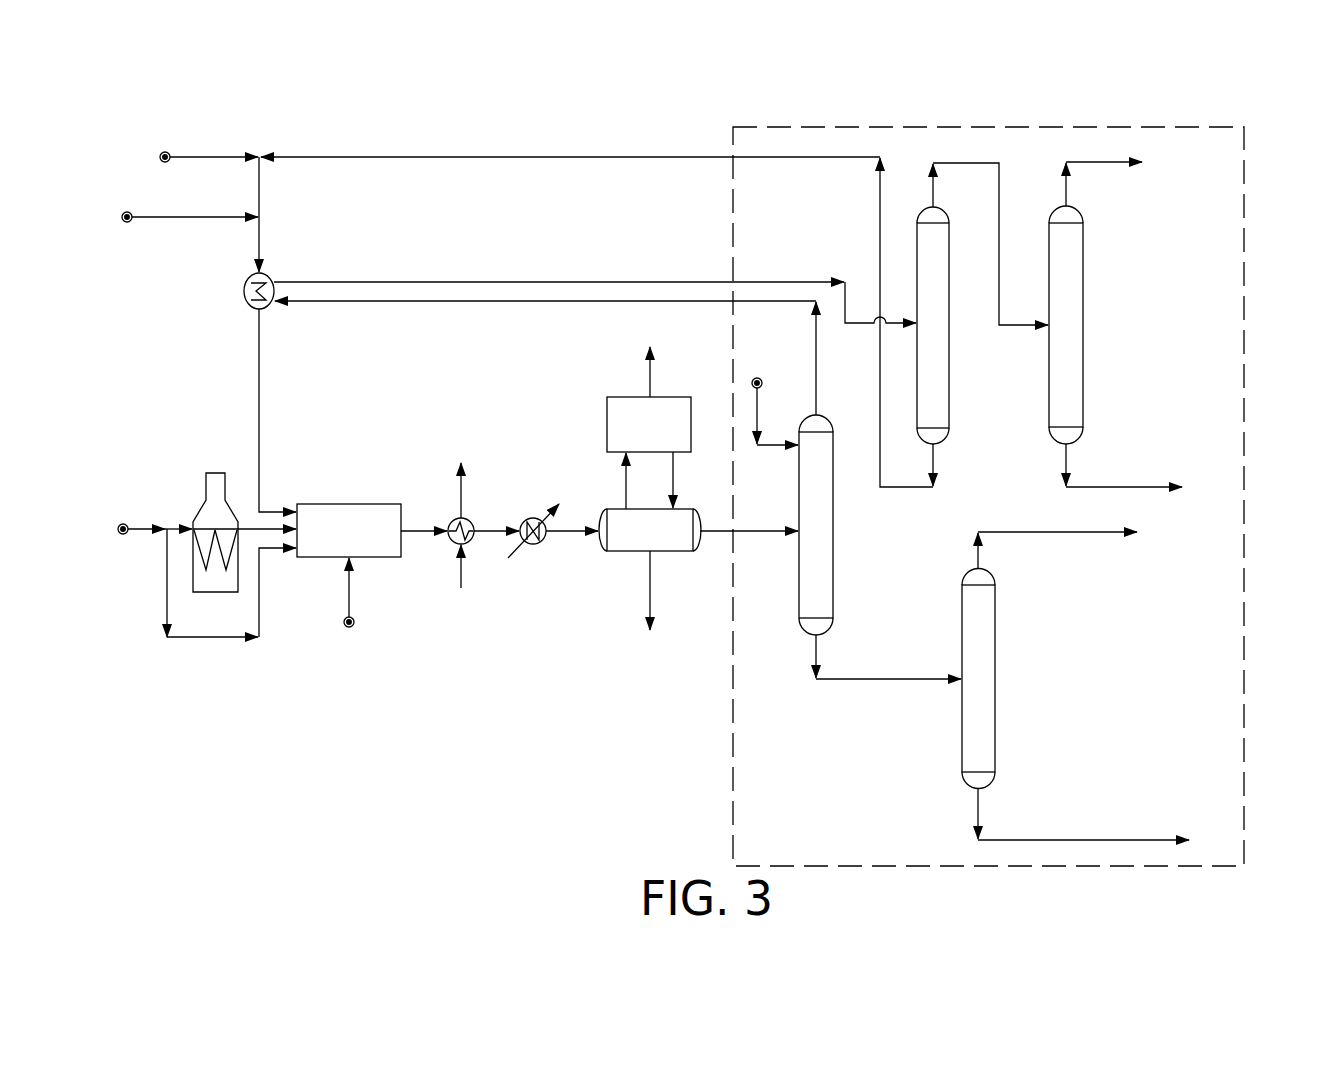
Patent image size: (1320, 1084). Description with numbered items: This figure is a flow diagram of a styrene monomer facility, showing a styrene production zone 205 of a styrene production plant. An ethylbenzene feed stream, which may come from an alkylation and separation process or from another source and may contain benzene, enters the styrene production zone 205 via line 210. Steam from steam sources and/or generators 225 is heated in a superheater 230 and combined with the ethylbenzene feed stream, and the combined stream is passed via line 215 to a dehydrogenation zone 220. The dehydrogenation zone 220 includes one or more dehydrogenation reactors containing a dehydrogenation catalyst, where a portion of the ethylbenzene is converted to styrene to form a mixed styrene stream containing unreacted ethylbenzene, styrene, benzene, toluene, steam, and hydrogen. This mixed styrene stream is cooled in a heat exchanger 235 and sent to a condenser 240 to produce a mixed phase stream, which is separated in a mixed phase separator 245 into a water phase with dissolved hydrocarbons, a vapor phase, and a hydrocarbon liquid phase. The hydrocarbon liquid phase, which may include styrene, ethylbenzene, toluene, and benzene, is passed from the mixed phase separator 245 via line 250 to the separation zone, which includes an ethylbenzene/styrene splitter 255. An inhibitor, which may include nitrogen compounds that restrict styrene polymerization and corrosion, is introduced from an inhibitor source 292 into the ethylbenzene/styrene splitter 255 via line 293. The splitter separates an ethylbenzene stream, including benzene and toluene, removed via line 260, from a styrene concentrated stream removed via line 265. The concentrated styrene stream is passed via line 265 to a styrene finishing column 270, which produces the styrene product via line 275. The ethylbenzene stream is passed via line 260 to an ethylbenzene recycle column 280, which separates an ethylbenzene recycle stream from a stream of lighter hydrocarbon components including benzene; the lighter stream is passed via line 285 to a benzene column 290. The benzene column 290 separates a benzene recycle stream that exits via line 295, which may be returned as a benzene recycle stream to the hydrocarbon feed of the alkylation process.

The styrene production zone 205 is at (334, 155).
The line 210 is at (205, 155).
The line 215 is at (261, 355).
The dehydrogenation zone 220 is at (350, 503).
The steam sources and/or generators 225 is at (138, 525).
The superheater 230 is at (216, 471).
The heat exchanger 235 is at (470, 512).
The condenser 240 is at (535, 546).
The separator 245 is at (609, 552).
The line 250 is at (704, 536).
The ethylbenzene/styrene splitter 255 is at (1207, 125).
The line 260 is at (820, 392).
The line 265 is at (864, 682).
The styrene finishing column 270 is at (997, 690).
The line 275 is at (1073, 535).
The ethylbenzene recycle column 280 is at (951, 358).
The line 285 is at (968, 160).
The benzene column 290 is at (1085, 326).
The inhibitor source 292 is at (766, 383).
The line 293 is at (764, 448).
The line 295 is at (1085, 160).